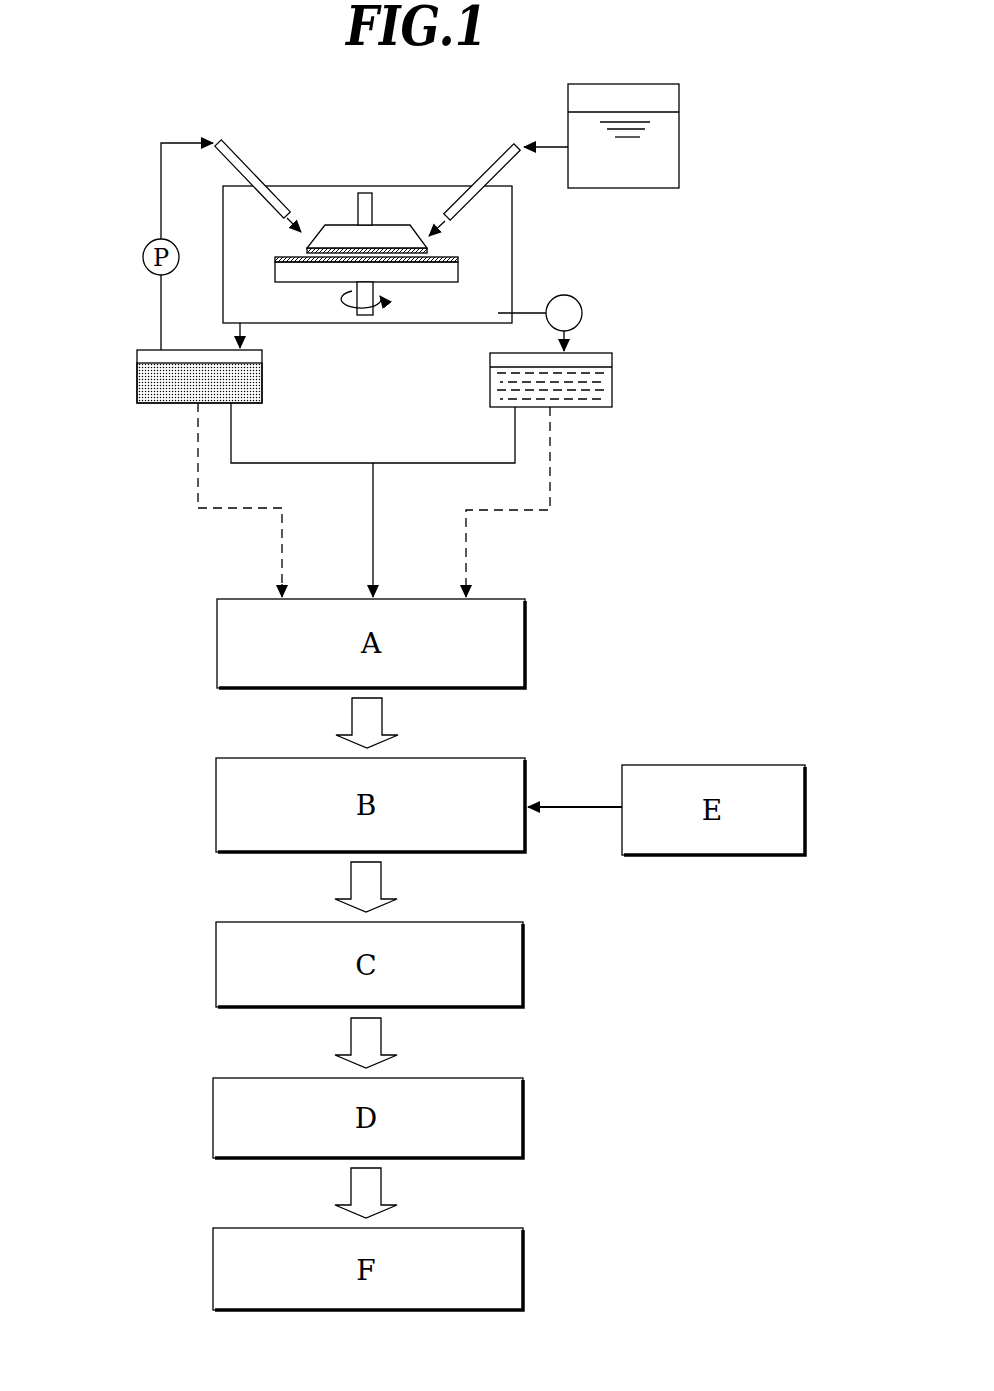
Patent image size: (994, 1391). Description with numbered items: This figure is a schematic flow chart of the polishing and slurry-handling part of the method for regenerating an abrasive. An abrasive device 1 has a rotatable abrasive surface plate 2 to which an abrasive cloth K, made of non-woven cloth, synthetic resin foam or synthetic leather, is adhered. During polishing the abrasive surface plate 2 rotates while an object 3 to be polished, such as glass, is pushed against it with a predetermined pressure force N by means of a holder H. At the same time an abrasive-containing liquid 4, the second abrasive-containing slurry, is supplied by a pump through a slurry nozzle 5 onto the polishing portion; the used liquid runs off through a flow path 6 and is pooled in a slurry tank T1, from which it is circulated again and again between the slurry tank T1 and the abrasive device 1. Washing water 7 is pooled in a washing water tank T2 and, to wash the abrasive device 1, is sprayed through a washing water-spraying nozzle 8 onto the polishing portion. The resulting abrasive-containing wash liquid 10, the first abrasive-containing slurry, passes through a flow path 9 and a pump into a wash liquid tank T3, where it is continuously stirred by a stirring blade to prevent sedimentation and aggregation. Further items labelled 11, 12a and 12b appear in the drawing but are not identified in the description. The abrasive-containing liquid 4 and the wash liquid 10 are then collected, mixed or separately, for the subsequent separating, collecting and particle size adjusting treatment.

The abrasive device 1 is at (387, 127).
The abrasive surface plate 2 is at (447, 273).
The object to be polished 3 is at (430, 252).
The abrasive-containing liquid 4 is at (150, 372).
The slurry nozzle 5 is at (248, 166).
The flow path 6 is at (245, 332).
The washing water 7 is at (663, 159).
The washing water-spraying nozzle 8 is at (495, 160).
The flow path 9 is at (567, 338).
The abrasive-containing wash liquid 10 is at (593, 382).
The signal line 11 is at (375, 520).
The signal line 12a is at (245, 508).
The signal line 12b is at (507, 513).
The pressure force N is at (365, 208).
The holder H is at (387, 235).
The abrasive cloth K is at (280, 257).
The slurry tank T1 is at (159, 381).
The washing water tank T2 is at (665, 154).
The wash liquid tank T3 is at (605, 387).